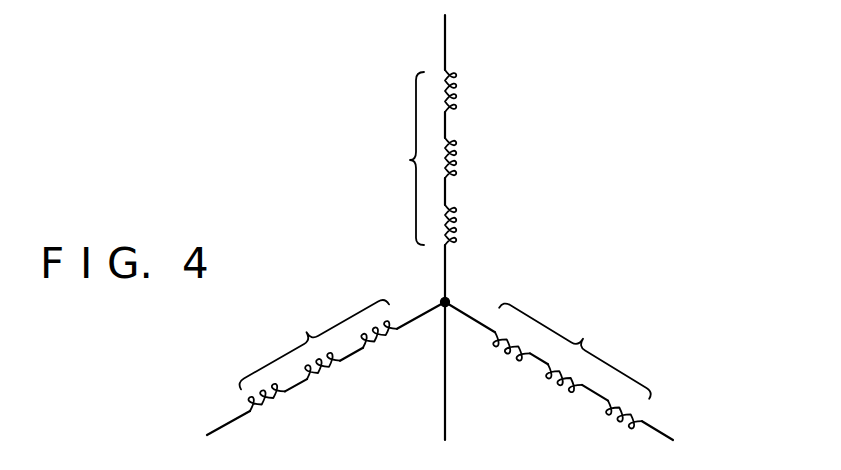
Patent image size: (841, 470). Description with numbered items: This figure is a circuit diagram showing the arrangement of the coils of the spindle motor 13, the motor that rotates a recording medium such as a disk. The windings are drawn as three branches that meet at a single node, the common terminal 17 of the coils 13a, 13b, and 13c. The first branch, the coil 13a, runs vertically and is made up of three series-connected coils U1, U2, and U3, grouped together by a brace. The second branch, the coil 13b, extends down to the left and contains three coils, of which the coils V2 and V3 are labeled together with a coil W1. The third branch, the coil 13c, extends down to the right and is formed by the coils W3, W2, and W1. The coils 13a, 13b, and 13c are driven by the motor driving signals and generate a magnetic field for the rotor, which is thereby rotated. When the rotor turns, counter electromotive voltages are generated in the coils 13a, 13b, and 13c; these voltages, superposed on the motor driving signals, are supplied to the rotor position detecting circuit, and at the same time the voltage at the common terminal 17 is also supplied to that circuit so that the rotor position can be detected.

The spindle motor 13 is at (572, 139).
The coil 13a is at (393, 158).
The coil 13b is at (326, 367).
The coil 13c is at (559, 371).
The common terminal 17 is at (448, 299).
The coil U1 is at (457, 96).
The coil U2 is at (457, 163).
The coil U3 is at (457, 225).
The coil V2 is at (332, 380).
The coil V3 is at (388, 350).
The coil W1 is at (280, 407).
The coil W2 is at (552, 376).
The coil W3 is at (500, 345).